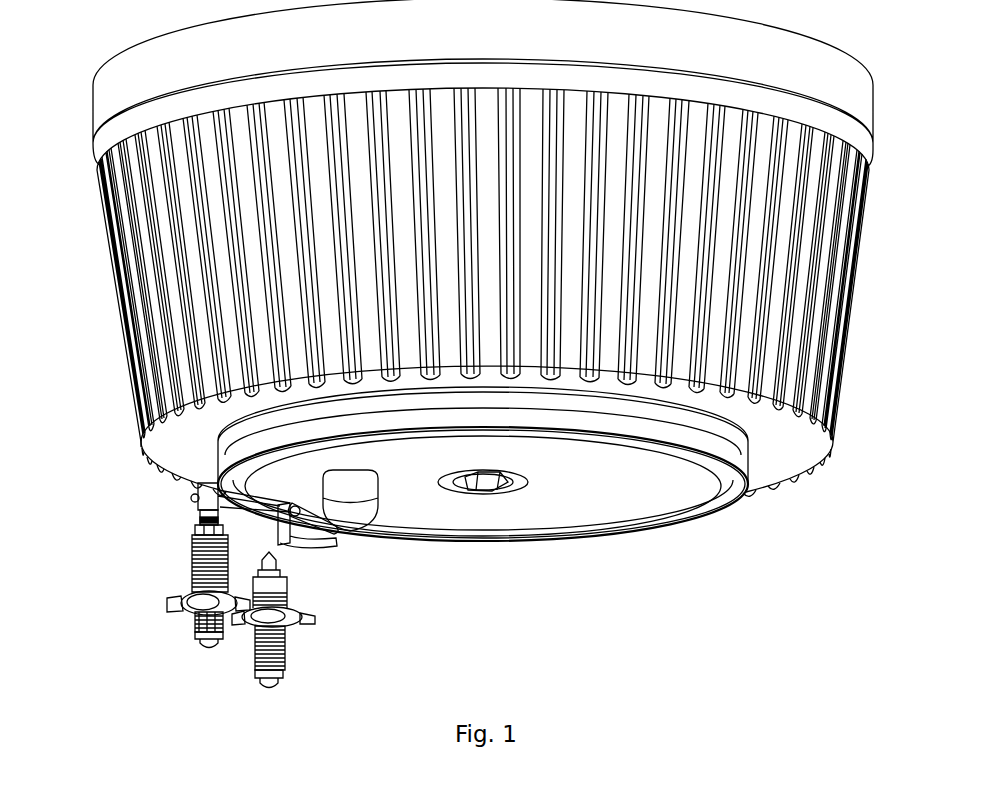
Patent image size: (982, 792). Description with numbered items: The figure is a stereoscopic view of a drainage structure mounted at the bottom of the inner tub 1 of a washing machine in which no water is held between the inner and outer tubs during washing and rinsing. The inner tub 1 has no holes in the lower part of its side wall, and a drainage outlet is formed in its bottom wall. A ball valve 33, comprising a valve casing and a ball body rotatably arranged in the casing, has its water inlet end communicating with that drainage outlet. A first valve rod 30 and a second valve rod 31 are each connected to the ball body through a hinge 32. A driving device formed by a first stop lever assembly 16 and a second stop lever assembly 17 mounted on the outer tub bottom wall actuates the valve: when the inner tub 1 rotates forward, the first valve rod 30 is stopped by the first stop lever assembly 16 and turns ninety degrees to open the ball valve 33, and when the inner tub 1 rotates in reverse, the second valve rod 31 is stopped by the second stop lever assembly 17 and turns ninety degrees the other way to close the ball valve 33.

The inner tub 1 is at (240, 385).
The first valve rod 30 is at (205, 480).
The first stop lever assembly 16 is at (195, 547).
The second stop lever assembly 17 is at (257, 642).
The second valve rod 31 is at (333, 548).
The hinge 32 is at (310, 543).
The ball valve 33 is at (352, 503).